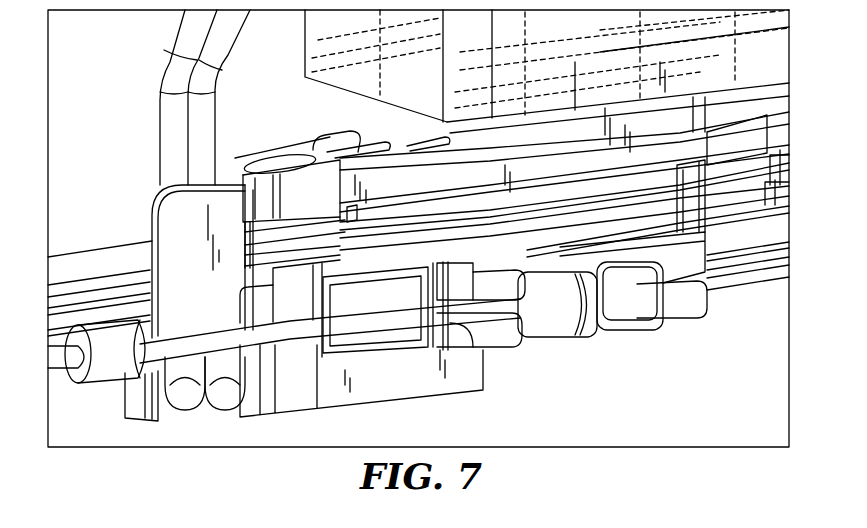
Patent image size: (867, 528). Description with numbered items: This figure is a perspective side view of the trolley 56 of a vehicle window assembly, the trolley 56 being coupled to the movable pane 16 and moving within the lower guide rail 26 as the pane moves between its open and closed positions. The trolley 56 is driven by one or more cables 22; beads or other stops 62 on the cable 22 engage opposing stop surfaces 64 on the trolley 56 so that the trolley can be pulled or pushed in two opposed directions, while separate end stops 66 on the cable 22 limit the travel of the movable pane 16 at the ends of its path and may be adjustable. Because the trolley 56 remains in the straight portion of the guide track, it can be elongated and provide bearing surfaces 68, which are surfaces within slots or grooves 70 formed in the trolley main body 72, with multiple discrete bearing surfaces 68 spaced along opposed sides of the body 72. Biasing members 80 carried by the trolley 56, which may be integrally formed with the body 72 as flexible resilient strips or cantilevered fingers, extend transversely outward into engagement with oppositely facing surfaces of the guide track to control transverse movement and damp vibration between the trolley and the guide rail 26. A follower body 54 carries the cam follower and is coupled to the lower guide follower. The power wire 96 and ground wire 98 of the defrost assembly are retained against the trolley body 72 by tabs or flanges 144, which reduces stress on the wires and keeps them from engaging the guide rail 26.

The movable pane 16 is at (778, 48).
The cable 22 is at (62, 366).
The lower guide rail 26 is at (770, 232).
The follower body 54 is at (768, 99).
The trolley 56 is at (272, 126).
The stops 62 is at (613, 300).
The stop surfaces 64 is at (576, 287).
The end stops 66 is at (100, 372).
The bearing surfaces 68 is at (348, 220).
The grooves 70 is at (253, 232).
The trolley main body 72 is at (474, 183).
The biasing members 80 is at (318, 172).
The power wire 96 is at (229, 42).
The ground wire 98 is at (182, 33).
The flanges 144 is at (180, 248).